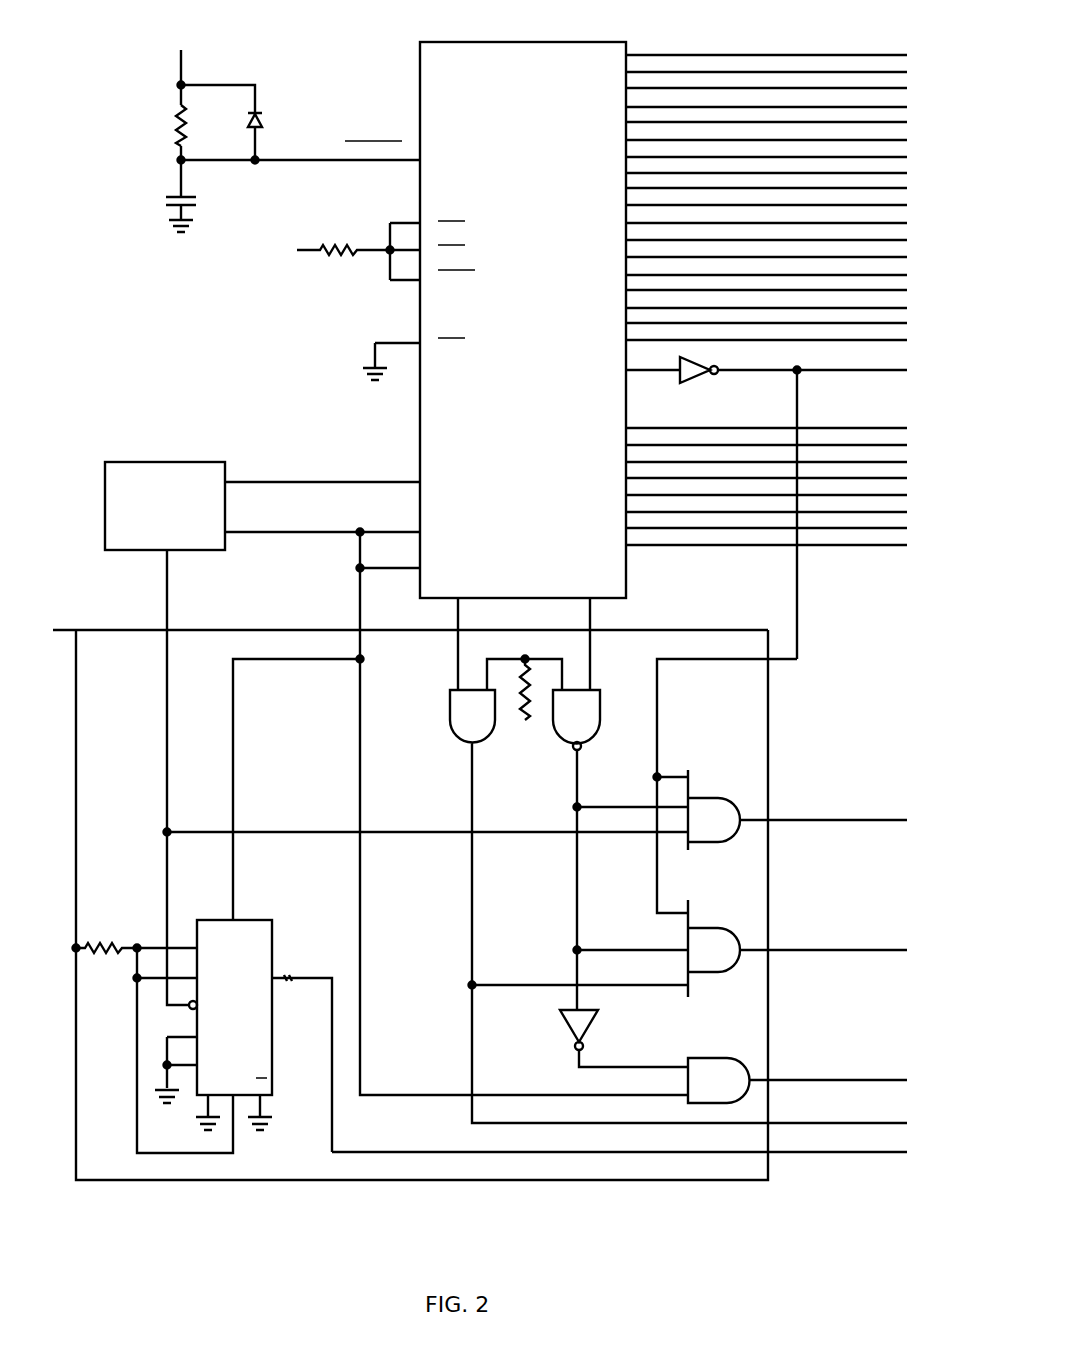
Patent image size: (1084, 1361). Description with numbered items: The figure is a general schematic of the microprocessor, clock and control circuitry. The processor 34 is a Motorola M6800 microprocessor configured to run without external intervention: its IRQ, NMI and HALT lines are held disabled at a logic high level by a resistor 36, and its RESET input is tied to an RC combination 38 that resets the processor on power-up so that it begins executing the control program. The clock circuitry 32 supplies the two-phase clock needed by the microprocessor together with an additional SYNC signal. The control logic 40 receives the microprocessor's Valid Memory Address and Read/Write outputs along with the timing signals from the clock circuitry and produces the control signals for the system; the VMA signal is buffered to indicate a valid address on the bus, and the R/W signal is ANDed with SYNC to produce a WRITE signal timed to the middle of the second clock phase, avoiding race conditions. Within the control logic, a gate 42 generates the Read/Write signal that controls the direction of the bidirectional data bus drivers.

The clock circuitry 32 is at (157, 462).
The processor 34 is at (497, 42).
The resistor 36 is at (372, 253).
The RC combination 38 is at (205, 85).
The control logic 40 is at (498, 855).
The gate 42 is at (737, 936).